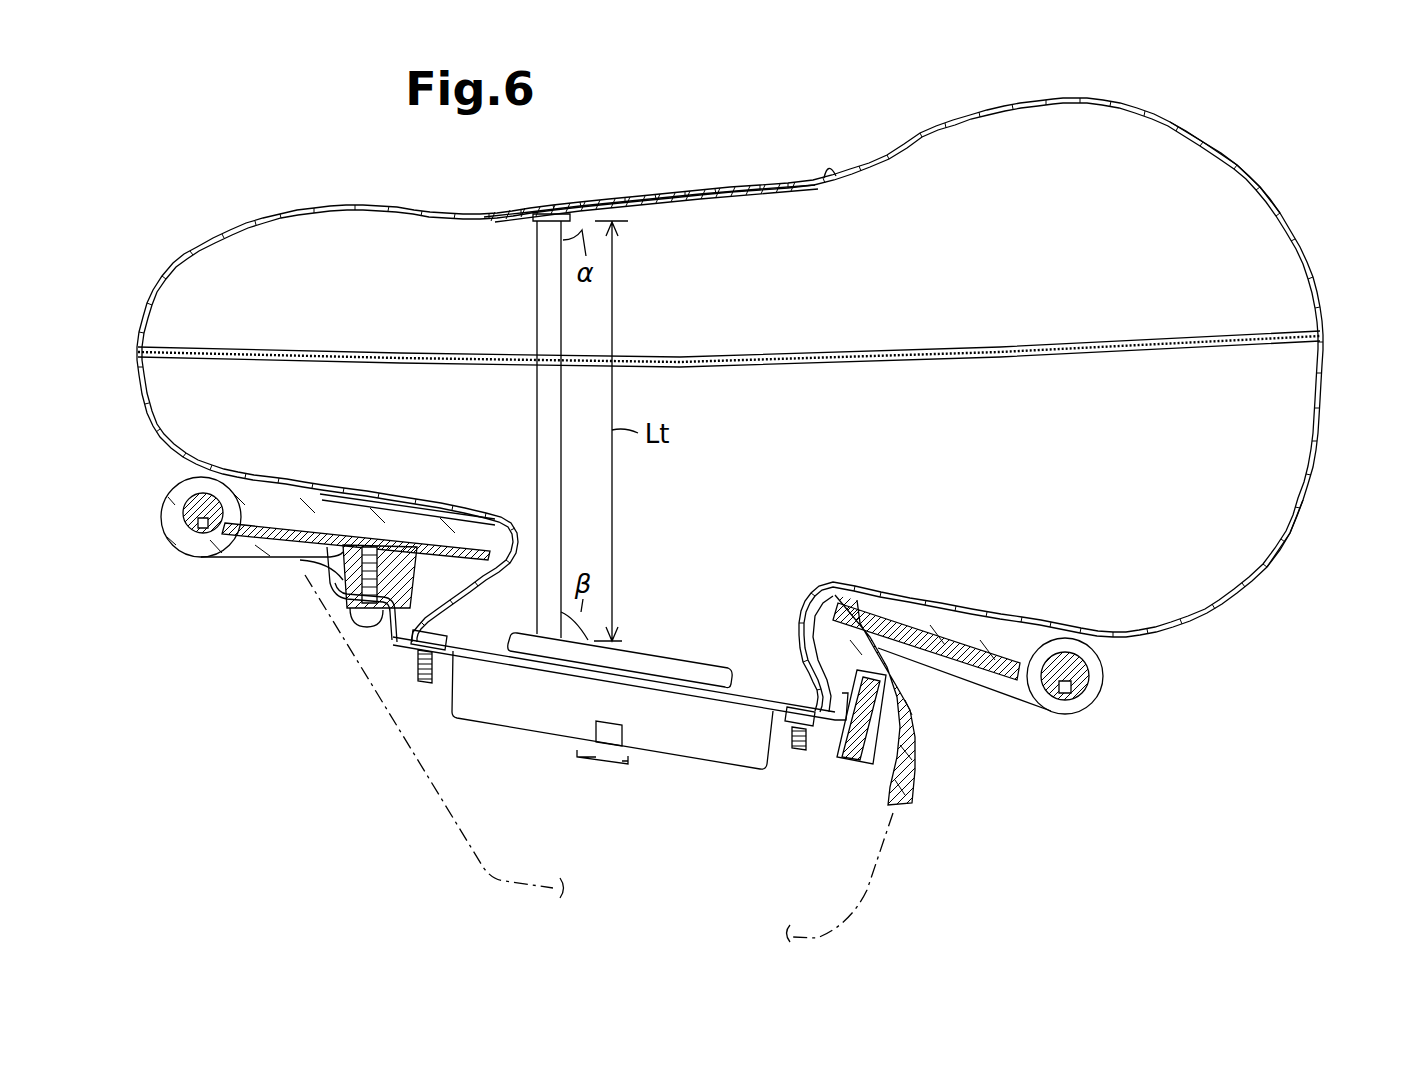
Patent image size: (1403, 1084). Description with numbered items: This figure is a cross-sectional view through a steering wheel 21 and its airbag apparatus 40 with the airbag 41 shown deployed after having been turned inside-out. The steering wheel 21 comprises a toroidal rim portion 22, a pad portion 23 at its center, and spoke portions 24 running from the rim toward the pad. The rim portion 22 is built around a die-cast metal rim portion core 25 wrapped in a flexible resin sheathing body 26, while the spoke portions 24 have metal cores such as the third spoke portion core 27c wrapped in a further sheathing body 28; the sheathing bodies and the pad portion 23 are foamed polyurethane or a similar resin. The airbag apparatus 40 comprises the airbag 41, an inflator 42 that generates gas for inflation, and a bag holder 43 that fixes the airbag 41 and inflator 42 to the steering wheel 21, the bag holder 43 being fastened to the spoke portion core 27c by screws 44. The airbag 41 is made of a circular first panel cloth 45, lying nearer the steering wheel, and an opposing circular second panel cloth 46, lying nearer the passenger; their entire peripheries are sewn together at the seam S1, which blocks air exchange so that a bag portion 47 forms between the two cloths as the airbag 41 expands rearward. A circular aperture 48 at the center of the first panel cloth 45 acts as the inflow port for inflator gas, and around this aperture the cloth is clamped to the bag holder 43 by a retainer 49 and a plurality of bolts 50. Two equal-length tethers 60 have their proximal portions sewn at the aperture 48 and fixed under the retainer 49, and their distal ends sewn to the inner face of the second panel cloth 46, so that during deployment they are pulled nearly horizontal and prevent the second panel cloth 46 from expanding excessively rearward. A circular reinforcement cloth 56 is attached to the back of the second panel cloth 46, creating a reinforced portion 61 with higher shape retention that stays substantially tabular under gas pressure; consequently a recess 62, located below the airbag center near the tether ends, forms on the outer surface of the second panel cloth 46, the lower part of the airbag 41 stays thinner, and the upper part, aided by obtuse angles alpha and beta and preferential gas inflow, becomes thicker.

The steering wheel 21 is at (241, 669).
The toroidal rim portion 22 is at (160, 540).
The pad portion 23 is at (955, 673).
The spoke portions 24 is at (268, 566).
The rim portion core 25 is at (175, 504).
The sheathing body 26 is at (185, 549).
The third spoke portion core 27c is at (288, 572).
The sheathing body 28 is at (240, 561).
The airbag apparatus 40 is at (699, 772).
The airbag 41 is at (1341, 395).
The inflator 42 is at (497, 656).
The bag holder 43 is at (411, 642).
The screws 44 is at (360, 631).
The first panel cloth 45 is at (1302, 515).
The second panel cloth 46 is at (1243, 167).
The bag portion 47 is at (1040, 463).
The aperture 48 is at (808, 663).
The retainer 49 is at (493, 641).
The bolts 50 is at (810, 686).
The reinforcement cloth 56 is at (734, 206).
The tethers 60 is at (540, 399).
The reinforced portion 61 is at (680, 193).
The recess 62 is at (834, 172).
The seam S1 is at (772, 368).